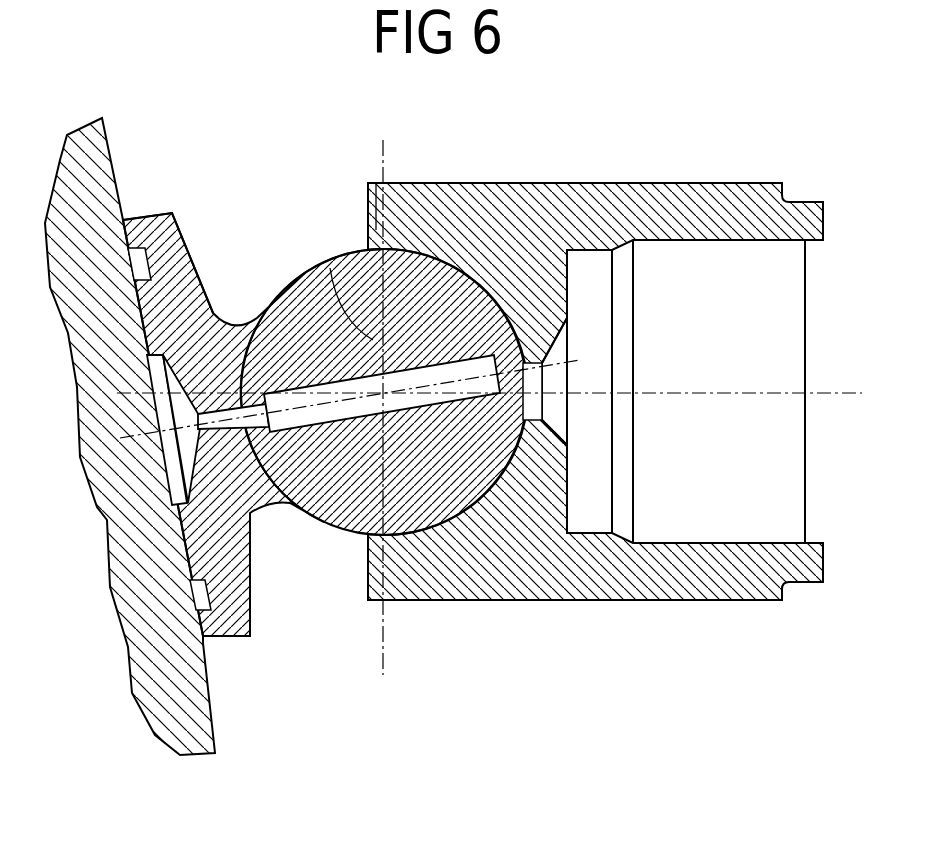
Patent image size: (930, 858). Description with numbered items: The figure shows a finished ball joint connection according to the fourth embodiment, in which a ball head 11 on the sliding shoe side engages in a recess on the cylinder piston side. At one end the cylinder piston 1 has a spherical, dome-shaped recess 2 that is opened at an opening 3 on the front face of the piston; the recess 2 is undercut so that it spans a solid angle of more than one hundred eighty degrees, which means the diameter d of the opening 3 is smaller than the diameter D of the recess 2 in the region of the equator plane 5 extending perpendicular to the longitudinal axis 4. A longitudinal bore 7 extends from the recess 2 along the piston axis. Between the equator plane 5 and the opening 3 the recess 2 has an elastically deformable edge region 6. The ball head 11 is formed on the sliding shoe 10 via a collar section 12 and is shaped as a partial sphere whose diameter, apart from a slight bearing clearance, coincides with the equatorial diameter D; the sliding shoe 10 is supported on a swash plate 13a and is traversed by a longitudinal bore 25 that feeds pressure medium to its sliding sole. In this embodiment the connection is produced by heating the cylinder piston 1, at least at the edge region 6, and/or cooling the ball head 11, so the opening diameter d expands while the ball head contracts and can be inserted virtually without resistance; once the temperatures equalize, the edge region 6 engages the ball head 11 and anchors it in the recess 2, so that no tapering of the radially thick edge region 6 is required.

The cylinder piston 1 is at (655, 205).
The dome-shaped recess 2 is at (467, 262).
The opening 3 is at (372, 246).
The longitudinal axis 4 is at (720, 396).
The equator plane 5 is at (383, 655).
The edge region 6 is at (373, 228).
The longitudinal bore 7 is at (561, 437).
The sliding shoe 10 is at (180, 293).
The ball head 11 is at (437, 493).
The collar section 12 is at (240, 332).
The swash plate 13a is at (135, 555).
The longitudinal bore 25 is at (315, 412).
The diameter of the recess D is at (318, 268).
The opening diameter d is at (363, 247).